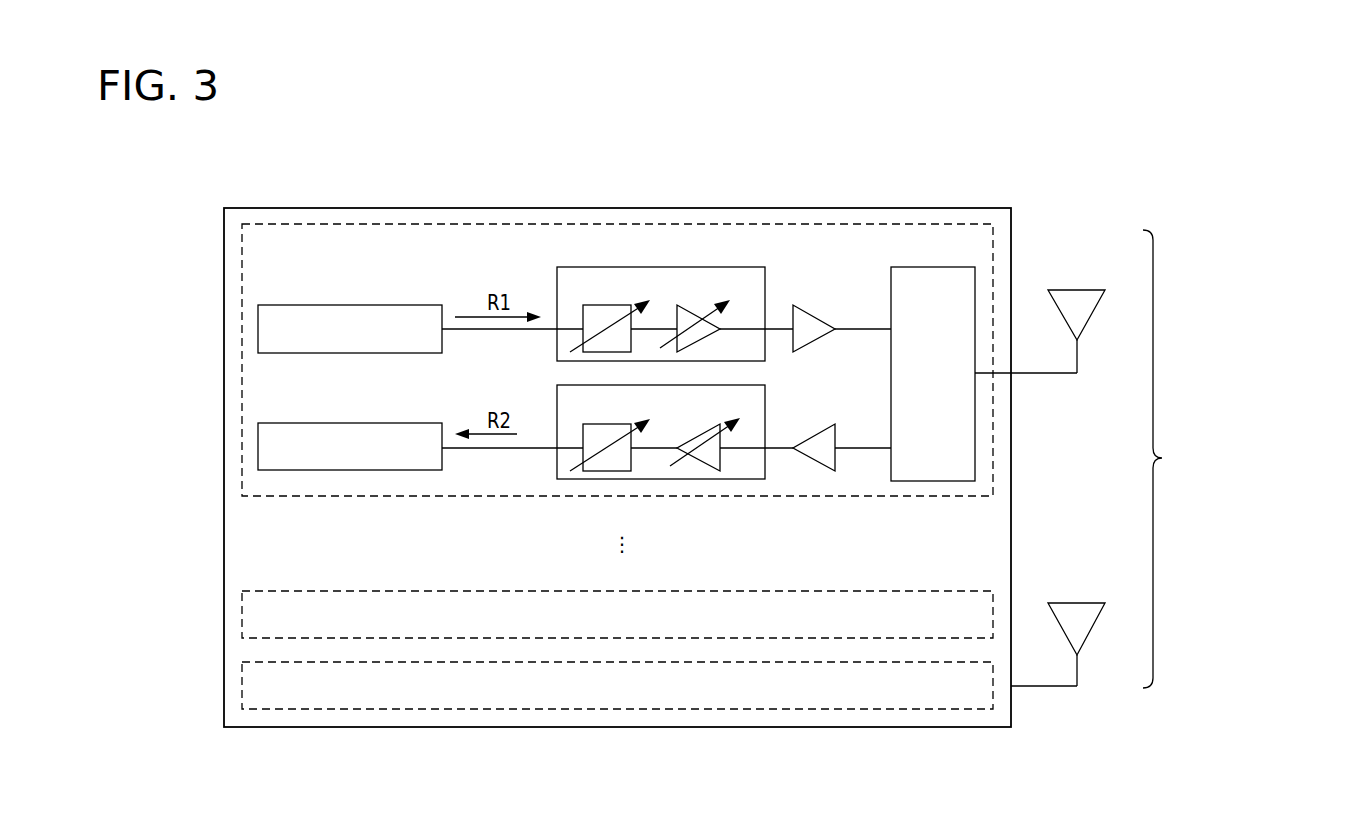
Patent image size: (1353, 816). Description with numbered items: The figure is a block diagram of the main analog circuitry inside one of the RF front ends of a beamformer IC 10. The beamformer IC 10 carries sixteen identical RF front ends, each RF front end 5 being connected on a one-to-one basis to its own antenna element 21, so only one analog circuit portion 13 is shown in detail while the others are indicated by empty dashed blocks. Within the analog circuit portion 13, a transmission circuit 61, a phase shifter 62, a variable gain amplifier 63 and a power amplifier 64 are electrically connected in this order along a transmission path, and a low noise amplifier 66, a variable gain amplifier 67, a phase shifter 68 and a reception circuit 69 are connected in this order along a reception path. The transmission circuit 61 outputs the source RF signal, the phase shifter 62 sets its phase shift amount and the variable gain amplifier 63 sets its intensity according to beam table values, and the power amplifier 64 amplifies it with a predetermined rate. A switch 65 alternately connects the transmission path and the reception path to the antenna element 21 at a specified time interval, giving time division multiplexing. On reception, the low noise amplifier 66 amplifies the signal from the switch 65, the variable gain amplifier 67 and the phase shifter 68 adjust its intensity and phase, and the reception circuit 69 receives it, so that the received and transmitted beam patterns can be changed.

The beamformer IC 10 is at (790, 190).
The RF front end 5 is at (242, 360).
The analog circuit portion 13 is at (742, 512).
The antenna element 21 is at (1141, 458).
The transmission circuit 61 is at (385, 305).
The phase shifter 62 is at (611, 305).
The variable gain amplifier 63 is at (697, 312).
The power amplifier 64 is at (813, 312).
The switch 65 is at (919, 267).
The low noise amplifier 66 is at (813, 428).
The variable gain amplifier 67 is at (697, 430).
The phase shifter 68 is at (611, 424).
The reception circuit 69 is at (385, 423).